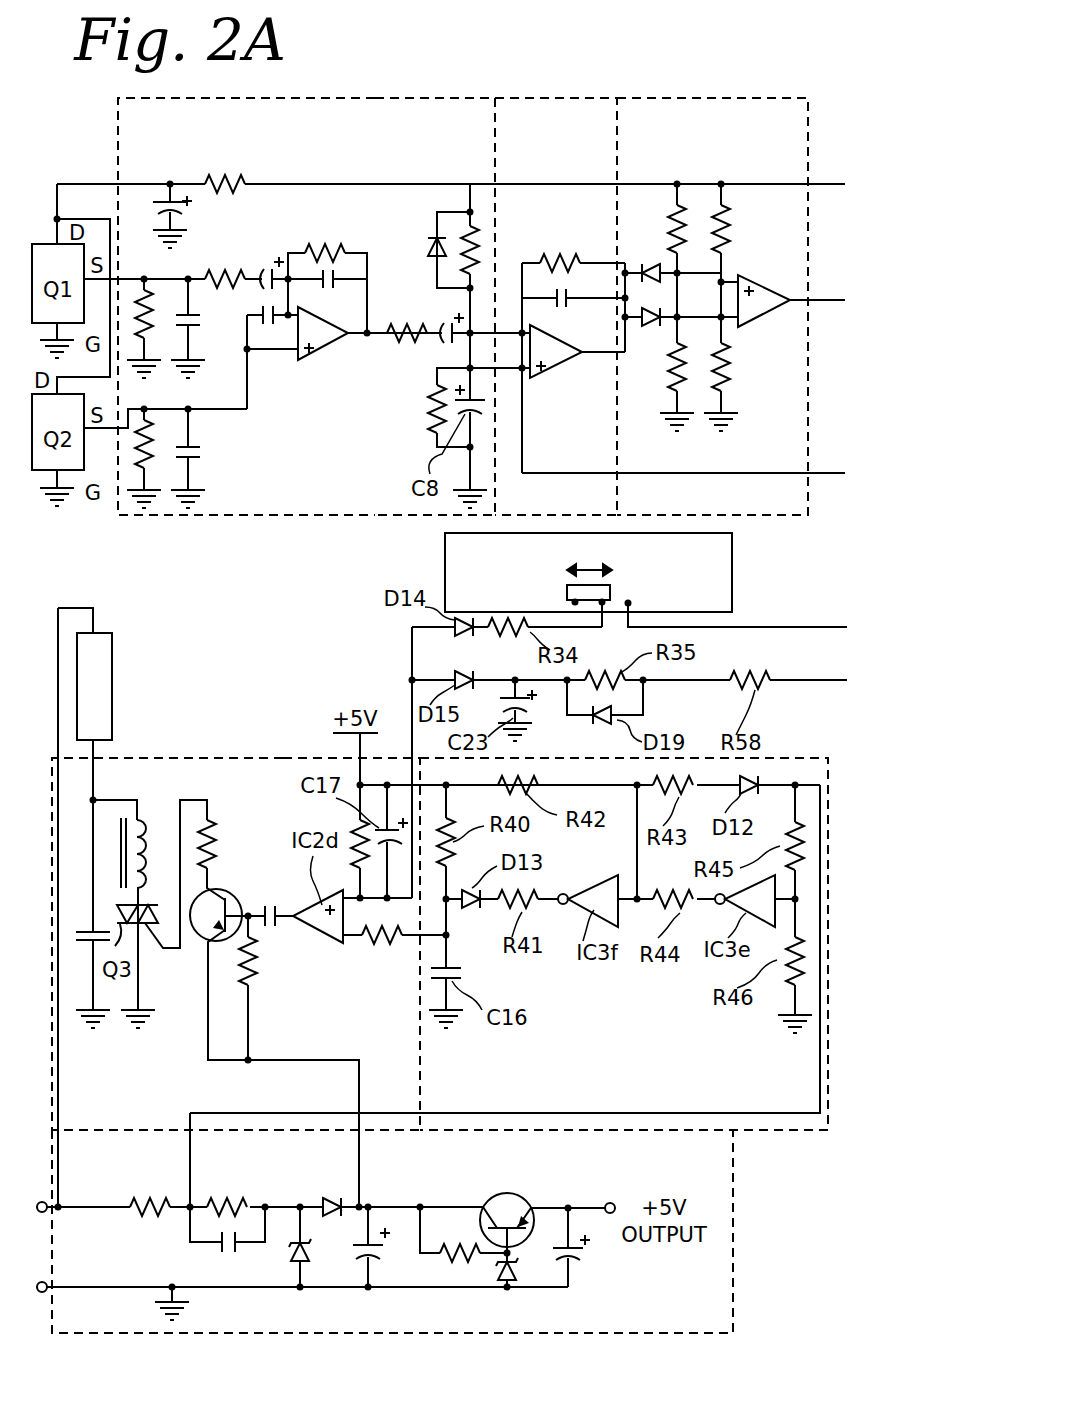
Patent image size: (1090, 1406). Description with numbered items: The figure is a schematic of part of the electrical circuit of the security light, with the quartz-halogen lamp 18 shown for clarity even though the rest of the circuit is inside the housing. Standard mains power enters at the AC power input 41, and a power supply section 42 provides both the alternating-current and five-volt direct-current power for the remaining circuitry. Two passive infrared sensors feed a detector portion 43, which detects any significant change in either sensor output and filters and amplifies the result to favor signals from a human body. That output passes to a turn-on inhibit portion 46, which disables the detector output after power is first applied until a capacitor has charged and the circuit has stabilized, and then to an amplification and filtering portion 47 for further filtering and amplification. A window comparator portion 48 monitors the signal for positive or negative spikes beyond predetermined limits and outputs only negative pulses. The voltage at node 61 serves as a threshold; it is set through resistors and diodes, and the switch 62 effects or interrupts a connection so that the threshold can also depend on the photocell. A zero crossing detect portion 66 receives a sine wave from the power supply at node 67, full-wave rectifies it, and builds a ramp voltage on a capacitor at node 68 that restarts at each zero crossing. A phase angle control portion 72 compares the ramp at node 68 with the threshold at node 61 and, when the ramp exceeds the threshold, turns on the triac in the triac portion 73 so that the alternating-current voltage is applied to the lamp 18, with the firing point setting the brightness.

The quartz-halogen lamp 18 is at (112, 672).
The 120 VAC power input 41 is at (38, 1193).
The power supply section 42 is at (735, 1237).
The detector portion 43 is at (313, 97).
The turn-on inhibit portion 46 is at (432, 97).
The amplification and filtering portion 47 is at (558, 97).
The window comparator portion 48 is at (732, 97).
The node 61 is at (412, 680).
The switch 62 is at (445, 570).
The zero crossing detect portion 66 is at (783, 1135).
The node 67 is at (190, 1208).
The node 68 is at (448, 937).
The phase angle control portion 72 is at (308, 757).
The triac portion 73 is at (213, 757).